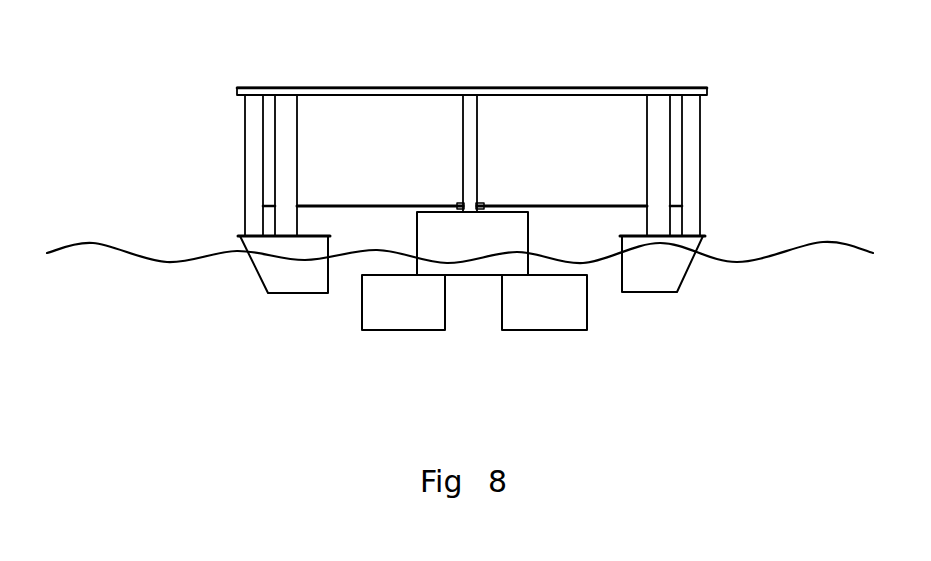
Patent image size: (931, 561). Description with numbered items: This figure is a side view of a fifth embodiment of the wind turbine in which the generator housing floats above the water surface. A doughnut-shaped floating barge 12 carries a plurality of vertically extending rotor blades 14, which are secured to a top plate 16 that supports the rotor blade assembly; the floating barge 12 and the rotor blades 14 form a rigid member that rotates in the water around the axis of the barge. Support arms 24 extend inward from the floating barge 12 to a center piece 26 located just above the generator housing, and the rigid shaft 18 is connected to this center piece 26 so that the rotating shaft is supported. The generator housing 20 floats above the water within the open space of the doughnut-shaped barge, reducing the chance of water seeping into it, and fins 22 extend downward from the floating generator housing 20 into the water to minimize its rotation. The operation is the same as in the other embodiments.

The floating barge 12 is at (667, 273).
The rotor blades 14 is at (522, 165).
The top plate 16 is at (603, 88).
The rigid shaft 18 is at (472, 148).
The generator housing 20 is at (473, 268).
The fins 22 is at (474, 350).
The support arms 24 is at (338, 205).
The center piece 26 is at (462, 203).